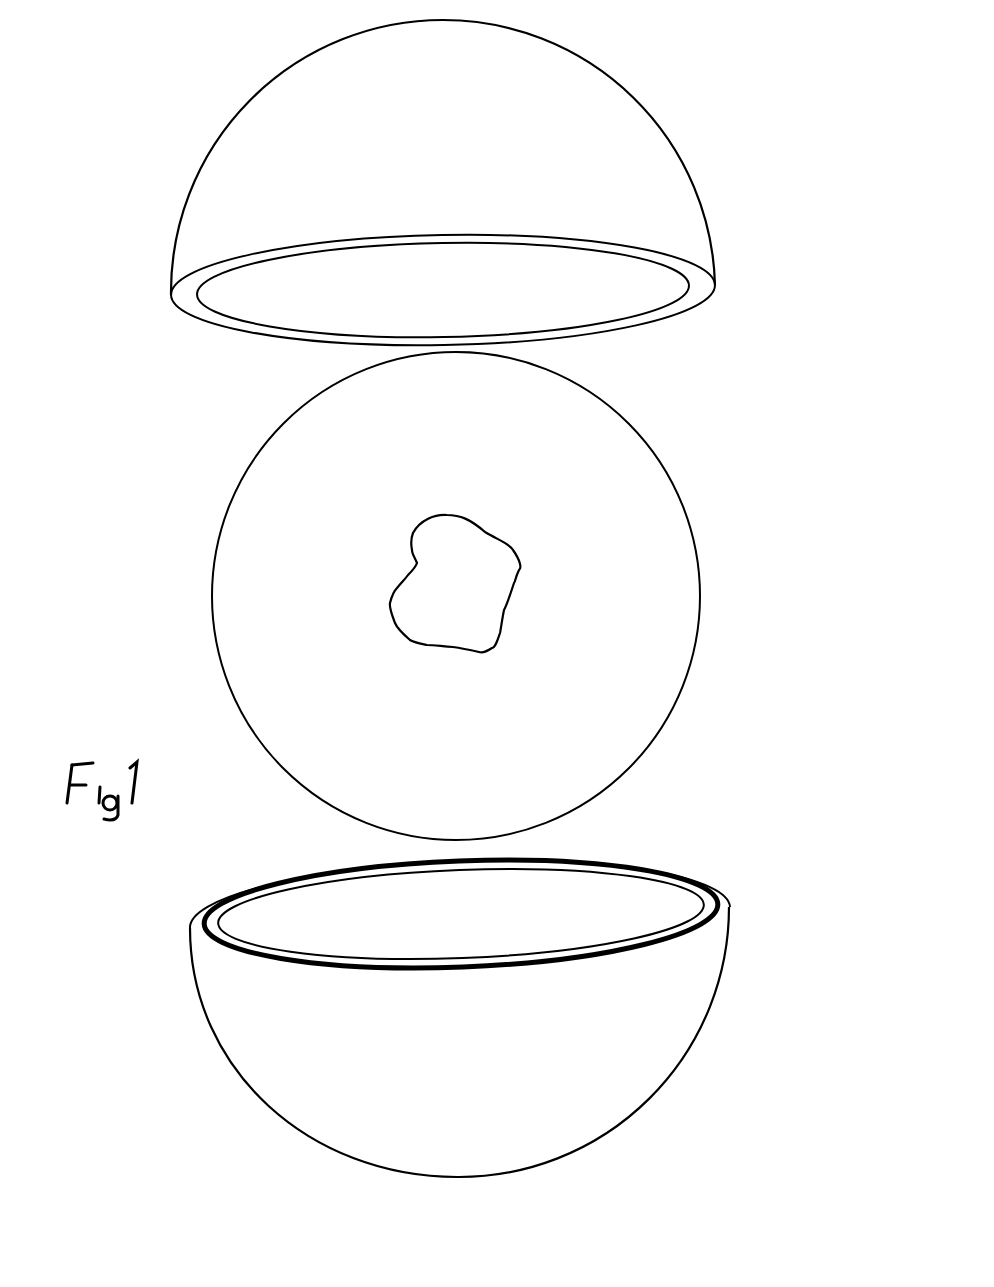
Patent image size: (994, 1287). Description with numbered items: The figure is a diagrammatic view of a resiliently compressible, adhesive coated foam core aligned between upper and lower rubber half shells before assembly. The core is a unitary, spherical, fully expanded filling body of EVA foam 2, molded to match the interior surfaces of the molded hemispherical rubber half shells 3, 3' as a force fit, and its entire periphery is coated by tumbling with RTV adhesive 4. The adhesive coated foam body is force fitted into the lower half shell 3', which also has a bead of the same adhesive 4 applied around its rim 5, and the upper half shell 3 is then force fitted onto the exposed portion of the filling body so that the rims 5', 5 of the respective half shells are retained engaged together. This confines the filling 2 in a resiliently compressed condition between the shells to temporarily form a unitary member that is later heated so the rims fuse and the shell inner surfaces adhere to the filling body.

The filling body of EVA foam 2 is at (480, 606).
The upper half shell 3 is at (443, 185).
The lower half shell 3' is at (460, 1019).
The RTV adhesive 4 is at (692, 703).
The rim 5 is at (477, 245).
The rim 5' is at (527, 914).